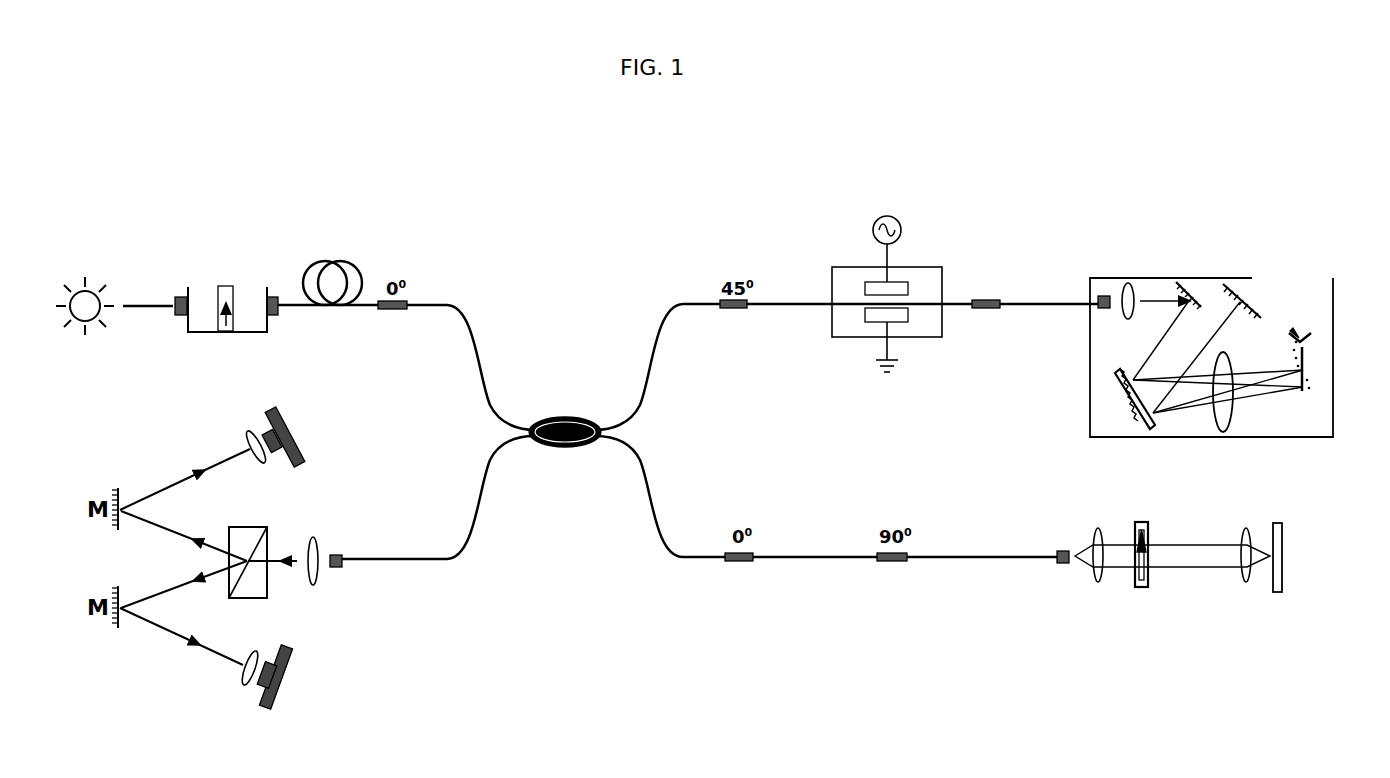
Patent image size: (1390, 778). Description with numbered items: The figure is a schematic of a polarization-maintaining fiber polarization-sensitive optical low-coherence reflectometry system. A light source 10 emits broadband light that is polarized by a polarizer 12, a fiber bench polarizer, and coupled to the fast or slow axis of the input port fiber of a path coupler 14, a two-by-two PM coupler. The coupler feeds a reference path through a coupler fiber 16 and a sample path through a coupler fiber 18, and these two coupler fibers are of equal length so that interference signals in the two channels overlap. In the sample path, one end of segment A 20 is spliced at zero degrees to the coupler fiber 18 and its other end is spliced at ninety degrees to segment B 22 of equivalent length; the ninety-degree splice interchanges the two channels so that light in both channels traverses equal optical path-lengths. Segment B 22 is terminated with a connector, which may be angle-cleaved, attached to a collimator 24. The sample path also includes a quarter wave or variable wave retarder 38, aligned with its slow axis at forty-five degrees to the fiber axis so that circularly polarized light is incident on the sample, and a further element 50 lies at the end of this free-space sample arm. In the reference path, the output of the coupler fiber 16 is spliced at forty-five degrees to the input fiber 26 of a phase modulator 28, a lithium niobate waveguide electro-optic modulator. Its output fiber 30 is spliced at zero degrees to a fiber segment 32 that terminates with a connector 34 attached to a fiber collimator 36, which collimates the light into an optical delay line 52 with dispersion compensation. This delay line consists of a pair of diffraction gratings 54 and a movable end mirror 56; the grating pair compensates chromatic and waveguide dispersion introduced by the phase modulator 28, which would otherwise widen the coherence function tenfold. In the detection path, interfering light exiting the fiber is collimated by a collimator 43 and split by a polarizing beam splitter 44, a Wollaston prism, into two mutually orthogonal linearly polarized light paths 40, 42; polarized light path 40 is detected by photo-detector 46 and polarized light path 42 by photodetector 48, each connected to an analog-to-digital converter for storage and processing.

The light source 10 is at (86, 262).
The polarizer 12 is at (269, 333).
The path coupler 14 is at (563, 458).
The coupler fiber 16 is at (640, 405).
The coupler fiber 18 is at (643, 472).
The segment A 20 is at (872, 551).
The segment B 22 is at (913, 551).
The collimator 24 is at (1097, 587).
The input fiber 26 is at (790, 307).
The phase modulator 28 is at (930, 340).
The output fiber 30 is at (955, 306).
The fiber segment 32 is at (1052, 308).
The connector 34 is at (1099, 290).
The fiber collimator 36 is at (1128, 282).
The variable wave retarder 38 is at (1143, 590).
The polarized light path 40 is at (163, 530).
The polarized light path 42 is at (165, 590).
The collimator 43 is at (322, 541).
The polarizing beam splitter 44 is at (268, 590).
The photo-detector 46 is at (298, 432).
The photodetector 48 is at (291, 670).
The reflector plate 50 is at (1276, 598).
The spectrometer 52 is at (1234, 305).
The diffraction gratings 54 is at (1310, 320).
The movable end mirror 56 is at (1312, 340).